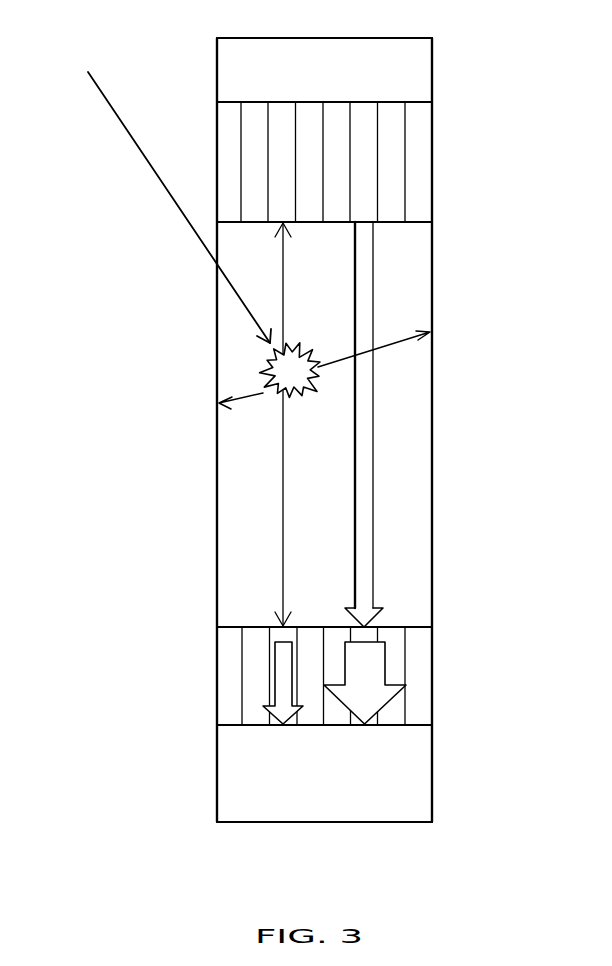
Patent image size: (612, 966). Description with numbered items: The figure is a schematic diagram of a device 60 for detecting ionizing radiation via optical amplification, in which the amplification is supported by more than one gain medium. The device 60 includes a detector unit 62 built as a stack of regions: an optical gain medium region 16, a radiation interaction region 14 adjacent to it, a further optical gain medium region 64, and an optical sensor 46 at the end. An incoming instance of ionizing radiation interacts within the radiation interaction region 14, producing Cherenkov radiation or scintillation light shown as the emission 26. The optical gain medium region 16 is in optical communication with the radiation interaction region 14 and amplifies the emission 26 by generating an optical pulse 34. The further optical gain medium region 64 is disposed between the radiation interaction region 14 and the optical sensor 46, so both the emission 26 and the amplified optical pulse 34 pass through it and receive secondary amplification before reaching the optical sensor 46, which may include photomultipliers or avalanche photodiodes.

The device 60 is at (468, 30).
The detector unit 62 is at (310, 40).
The optical gain medium region 16 is at (432, 160).
The radiation interaction region 14 is at (217, 335).
The emission 26 is at (283, 455).
The optical pulse 34 is at (372, 418).
The further optical gain medium region 64 is at (217, 660).
The optical sensor 46 is at (217, 753).